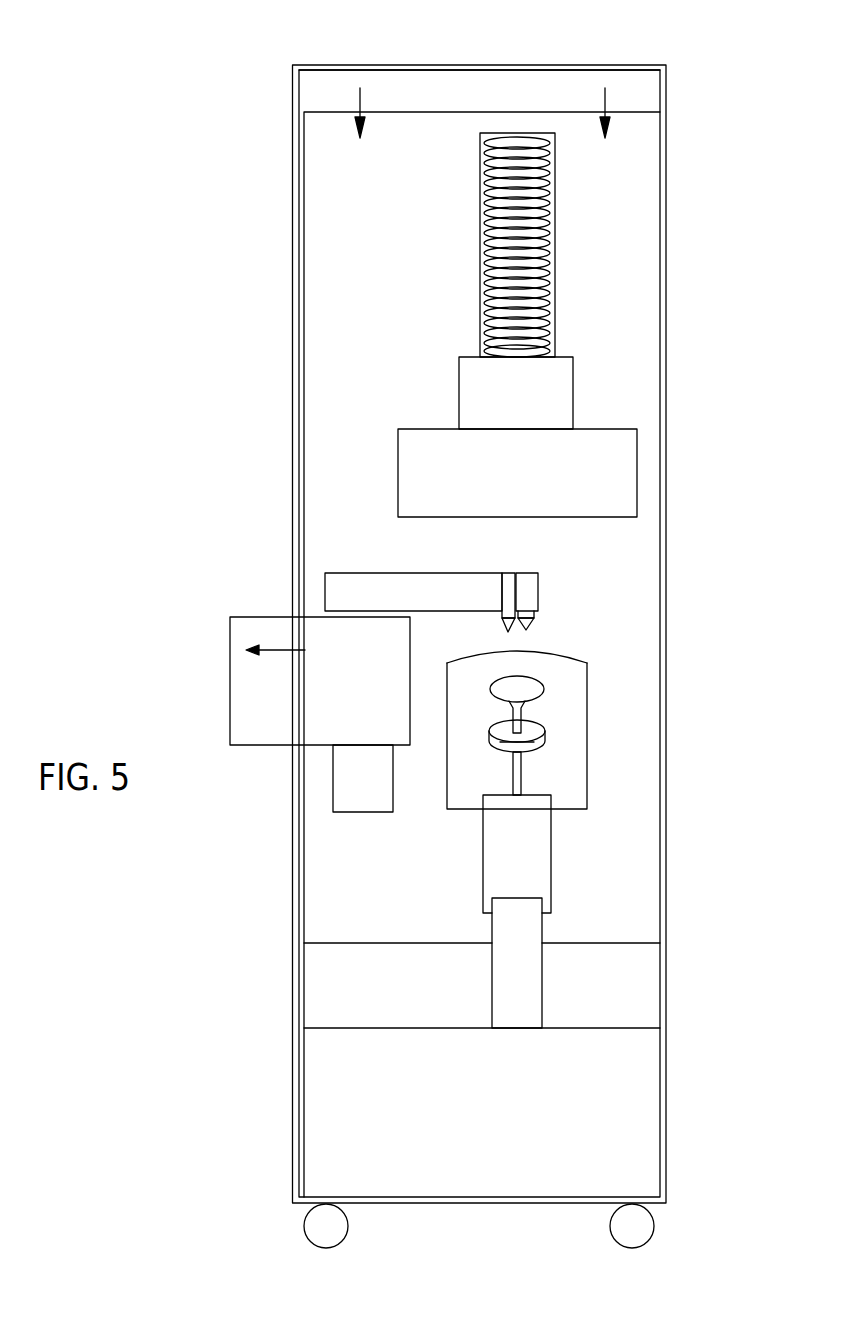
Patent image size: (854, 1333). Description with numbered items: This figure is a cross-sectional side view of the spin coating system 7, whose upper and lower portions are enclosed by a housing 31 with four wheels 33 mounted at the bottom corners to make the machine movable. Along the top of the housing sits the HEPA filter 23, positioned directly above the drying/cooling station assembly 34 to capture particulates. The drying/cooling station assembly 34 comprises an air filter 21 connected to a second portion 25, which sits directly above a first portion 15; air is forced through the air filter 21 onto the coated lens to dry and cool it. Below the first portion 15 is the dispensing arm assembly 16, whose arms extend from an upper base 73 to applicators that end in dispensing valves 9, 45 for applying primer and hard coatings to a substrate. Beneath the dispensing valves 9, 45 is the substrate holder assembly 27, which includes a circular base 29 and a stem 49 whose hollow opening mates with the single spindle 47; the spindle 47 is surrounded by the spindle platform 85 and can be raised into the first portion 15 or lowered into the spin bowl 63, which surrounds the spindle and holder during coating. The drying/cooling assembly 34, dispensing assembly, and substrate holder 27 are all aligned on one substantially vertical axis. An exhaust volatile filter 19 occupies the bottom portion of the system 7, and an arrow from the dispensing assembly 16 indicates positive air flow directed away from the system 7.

The spin coating system 7 is at (160, 150).
The dispensing valve 9 is at (502, 623).
The first portion of the drying/cooling assembly 15 is at (580, 470).
The dispensing arm assembly 16 is at (428, 560).
The exhaust volatile filter 19 is at (347, 1112).
The air filter 21 is at (547, 178).
The HEPA filter 23 is at (528, 90).
The second portion of the drying/cooling assembly 25 is at (542, 395).
The substrate holder assembly 27 is at (523, 690).
The circular base 29 is at (530, 733).
The housing 31 is at (293, 298).
The wheels 33 is at (316, 1228).
The drying/cooling station assembly 34 is at (443, 283).
The dispensing valve 45 is at (536, 622).
The single spindle 47 is at (518, 773).
The stem 49 is at (525, 716).
The spin bowl 63 is at (560, 785).
The upper base 73 is at (345, 592).
The spindle platform 85 is at (522, 858).